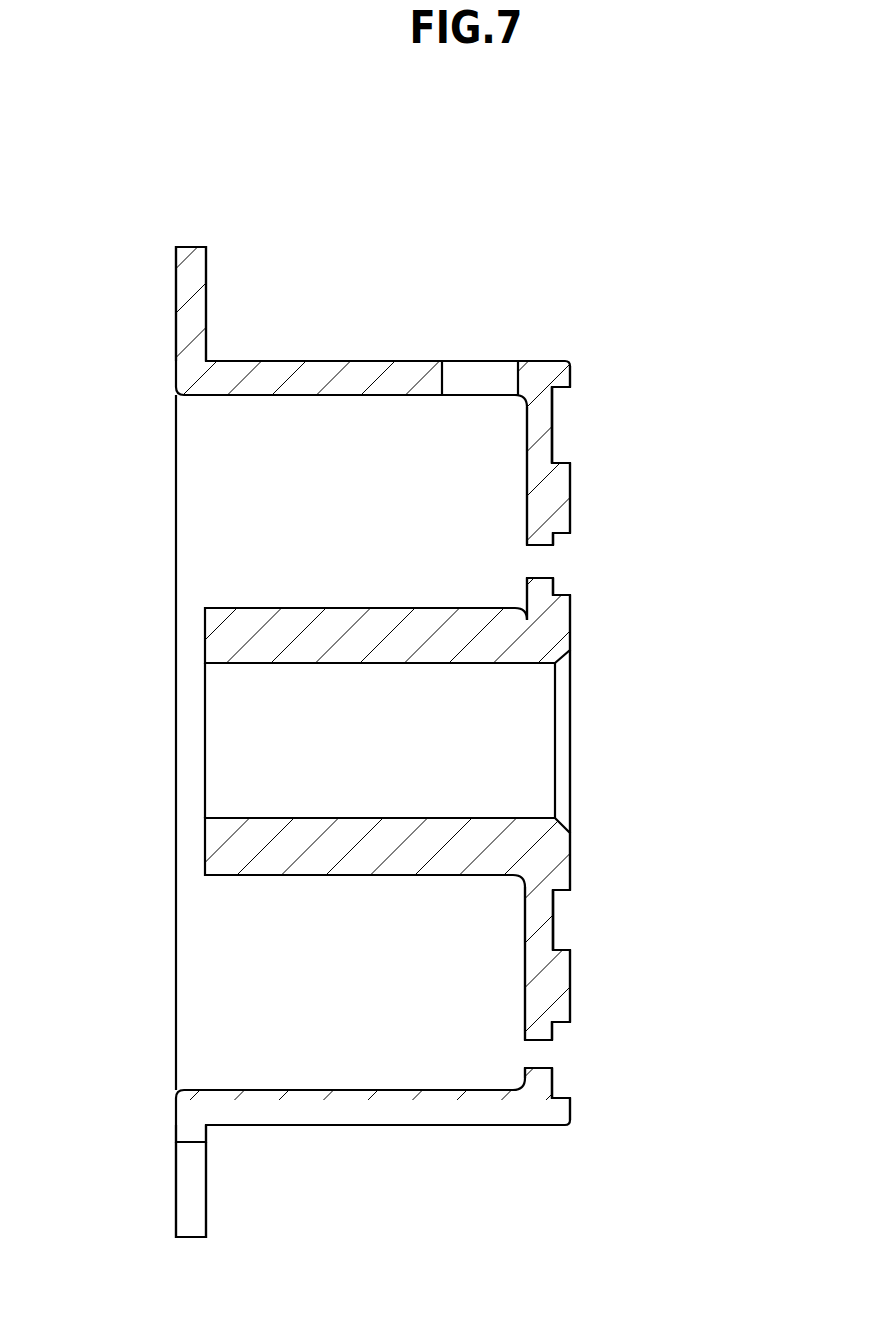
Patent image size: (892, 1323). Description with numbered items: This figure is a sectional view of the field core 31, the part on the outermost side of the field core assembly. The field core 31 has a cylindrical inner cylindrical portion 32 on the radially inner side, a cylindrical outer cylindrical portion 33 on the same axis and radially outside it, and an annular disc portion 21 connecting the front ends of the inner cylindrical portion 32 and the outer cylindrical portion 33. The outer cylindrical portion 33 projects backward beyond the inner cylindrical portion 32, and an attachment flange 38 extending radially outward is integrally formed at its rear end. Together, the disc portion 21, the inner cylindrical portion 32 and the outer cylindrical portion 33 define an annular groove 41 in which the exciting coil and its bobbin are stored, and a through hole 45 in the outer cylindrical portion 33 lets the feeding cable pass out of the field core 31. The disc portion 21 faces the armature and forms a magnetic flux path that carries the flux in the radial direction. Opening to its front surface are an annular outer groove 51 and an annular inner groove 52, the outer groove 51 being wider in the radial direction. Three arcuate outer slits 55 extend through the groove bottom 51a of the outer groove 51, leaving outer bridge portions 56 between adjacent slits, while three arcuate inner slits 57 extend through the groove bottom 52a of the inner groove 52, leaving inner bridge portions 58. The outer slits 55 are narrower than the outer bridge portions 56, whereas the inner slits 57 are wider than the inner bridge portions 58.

The disc portion 21 is at (558, 493).
The field core 31 is at (390, 360).
The inner cylindrical portion 32 is at (253, 618).
The outer cylindrical portion 33 is at (327, 377).
The attachment flange 38 is at (192, 242).
The annular groove 41 is at (317, 396).
The through hole 45 is at (515, 373).
The outer groove 51 is at (563, 388).
The groove bottom 51a is at (552, 416).
The inner groove 52 is at (563, 537).
The groove bottom 52a is at (553, 590).
The outer slit 55 is at (545, 1062).
The outer bridge portion 56 is at (541, 432).
The inner slit 57 is at (547, 575).
The inner bridge portion 58 is at (541, 914).